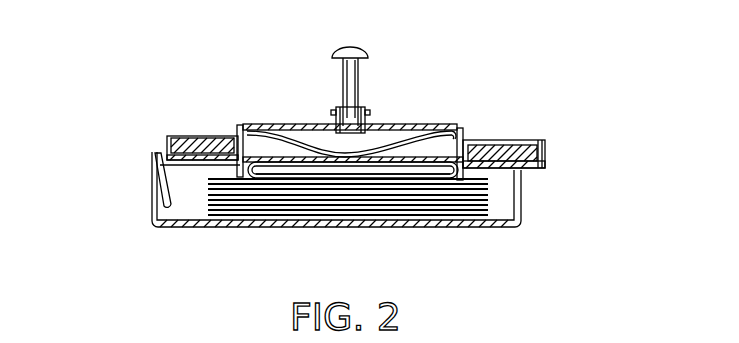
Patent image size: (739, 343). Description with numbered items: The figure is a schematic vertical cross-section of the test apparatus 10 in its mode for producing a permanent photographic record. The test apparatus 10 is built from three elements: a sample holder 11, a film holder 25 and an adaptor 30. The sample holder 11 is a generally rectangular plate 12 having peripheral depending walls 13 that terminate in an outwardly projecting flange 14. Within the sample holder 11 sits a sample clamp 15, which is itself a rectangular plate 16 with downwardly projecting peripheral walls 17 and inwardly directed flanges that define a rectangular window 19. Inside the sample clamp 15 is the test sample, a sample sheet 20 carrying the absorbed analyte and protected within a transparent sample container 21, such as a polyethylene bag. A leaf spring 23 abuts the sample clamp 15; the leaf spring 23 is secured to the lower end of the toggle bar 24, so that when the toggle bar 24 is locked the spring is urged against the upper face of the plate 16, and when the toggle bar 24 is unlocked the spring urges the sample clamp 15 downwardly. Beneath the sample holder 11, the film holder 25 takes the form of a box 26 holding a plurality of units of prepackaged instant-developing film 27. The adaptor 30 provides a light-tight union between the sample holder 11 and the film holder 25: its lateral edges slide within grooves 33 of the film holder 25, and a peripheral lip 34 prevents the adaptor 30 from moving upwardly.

The test apparatus 10 is at (311, 44).
The sample holder 11 is at (217, 120).
The rectangular plate 12 is at (405, 126).
The peripheral depending walls 13 is at (478, 147).
The outwardly projecting flange 14 is at (212, 135).
The sample clamp 15 is at (466, 141).
The rectangular plate 16 is at (252, 124).
The downwardly projecting peripheral walls 17 is at (165, 172).
The rectangular window 19 is at (281, 178).
The sample sheet 20 is at (290, 136).
The transparent sample container 21 is at (358, 182).
The leaf spring 23 is at (457, 130).
The toggle bar 24 is at (366, 48).
The film holder 25 is at (150, 206).
The box 26 is at (183, 226).
The prepackaged instant-developing film 27 is at (437, 227).
The adaptor 30 is at (546, 144).
The grooves 33 is at (163, 153).
The peripheral lip 34 is at (167, 136).